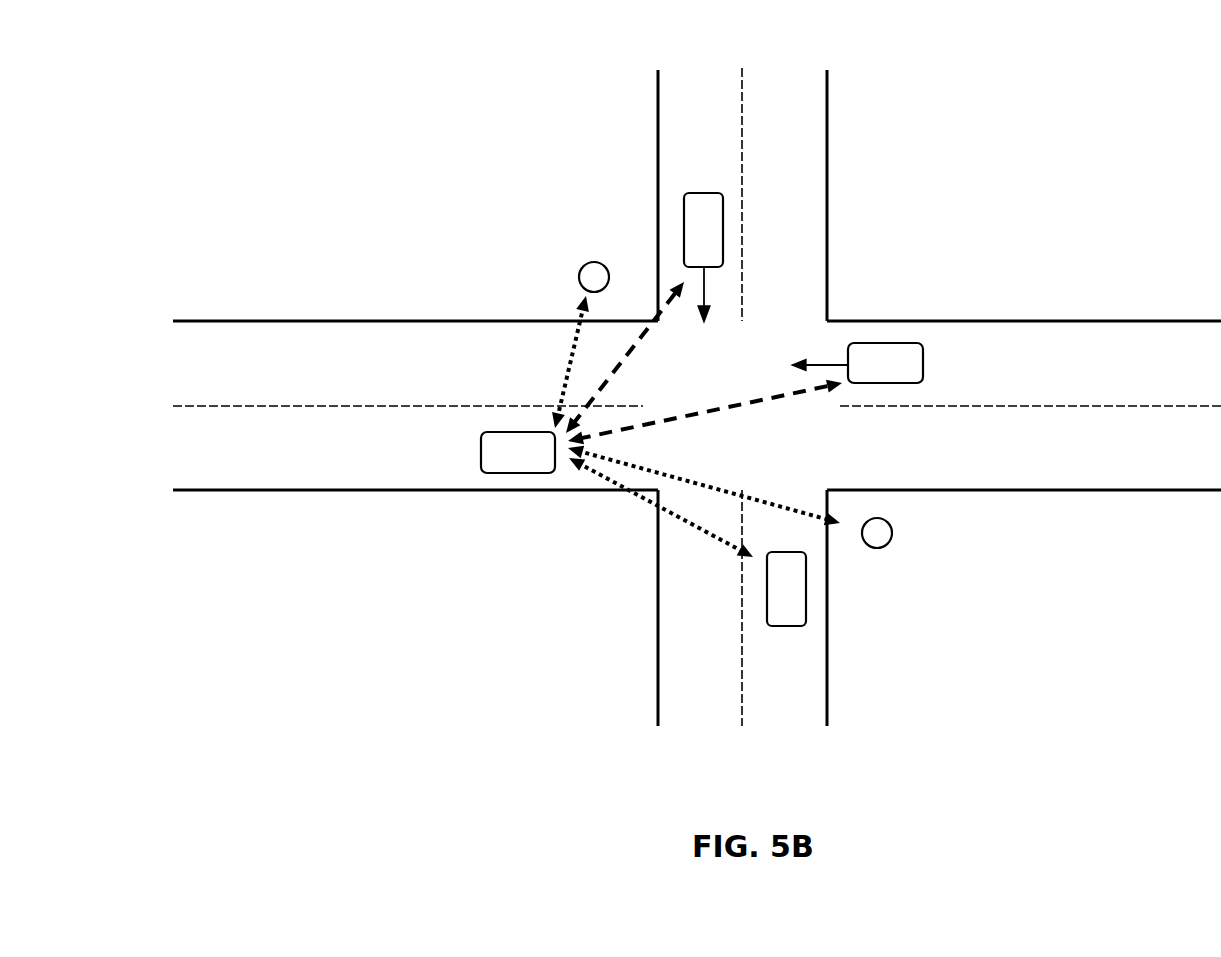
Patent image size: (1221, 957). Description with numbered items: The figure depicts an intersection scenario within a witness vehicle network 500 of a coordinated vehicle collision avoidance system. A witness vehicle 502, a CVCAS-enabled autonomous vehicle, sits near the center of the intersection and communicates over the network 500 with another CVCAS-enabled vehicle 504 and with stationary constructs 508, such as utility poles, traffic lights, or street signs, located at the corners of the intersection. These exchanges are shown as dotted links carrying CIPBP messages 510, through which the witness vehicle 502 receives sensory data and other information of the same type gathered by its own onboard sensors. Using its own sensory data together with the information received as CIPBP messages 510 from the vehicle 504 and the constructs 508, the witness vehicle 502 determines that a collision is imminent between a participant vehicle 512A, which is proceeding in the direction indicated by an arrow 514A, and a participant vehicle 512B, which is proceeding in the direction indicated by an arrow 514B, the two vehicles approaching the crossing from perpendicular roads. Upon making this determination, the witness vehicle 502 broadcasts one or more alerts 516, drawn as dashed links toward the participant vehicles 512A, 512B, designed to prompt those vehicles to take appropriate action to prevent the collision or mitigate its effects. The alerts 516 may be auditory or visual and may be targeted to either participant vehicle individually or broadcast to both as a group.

The network 500 is at (386, 121).
The witness vehicle 502 is at (500, 464).
The vehicle 504 is at (806, 603).
The stationary constructs 508 is at (579, 277).
The CIPBP messages 510 is at (565, 357).
The participant vehicle 512A is at (683, 249).
The participant vehicle 512B is at (860, 375).
The arrow 514A is at (704, 290).
The arrow 514B is at (822, 363).
The alerts 516 is at (640, 350).